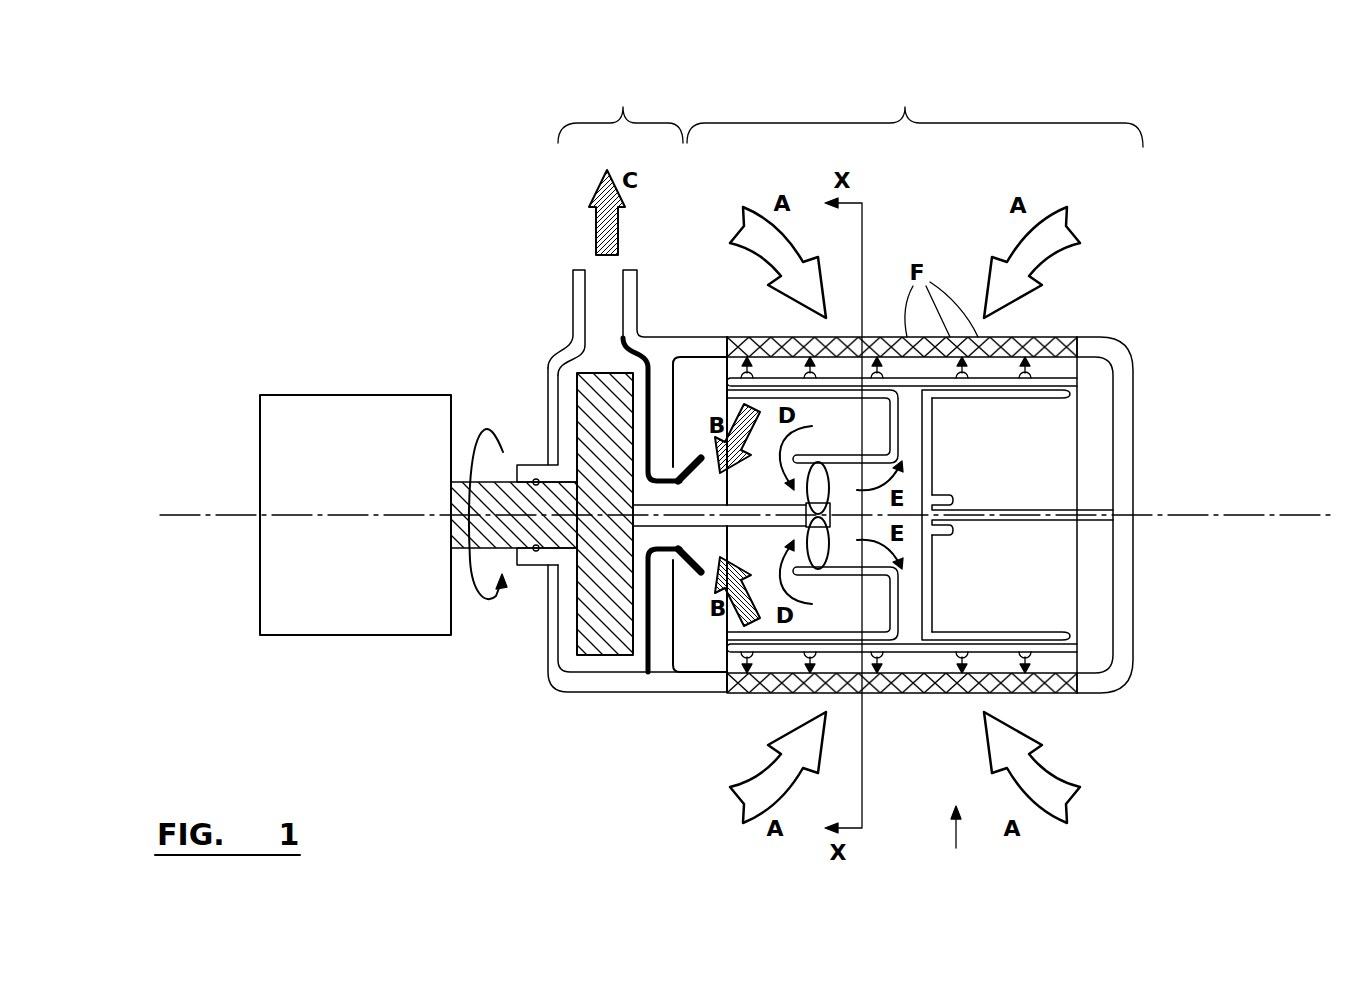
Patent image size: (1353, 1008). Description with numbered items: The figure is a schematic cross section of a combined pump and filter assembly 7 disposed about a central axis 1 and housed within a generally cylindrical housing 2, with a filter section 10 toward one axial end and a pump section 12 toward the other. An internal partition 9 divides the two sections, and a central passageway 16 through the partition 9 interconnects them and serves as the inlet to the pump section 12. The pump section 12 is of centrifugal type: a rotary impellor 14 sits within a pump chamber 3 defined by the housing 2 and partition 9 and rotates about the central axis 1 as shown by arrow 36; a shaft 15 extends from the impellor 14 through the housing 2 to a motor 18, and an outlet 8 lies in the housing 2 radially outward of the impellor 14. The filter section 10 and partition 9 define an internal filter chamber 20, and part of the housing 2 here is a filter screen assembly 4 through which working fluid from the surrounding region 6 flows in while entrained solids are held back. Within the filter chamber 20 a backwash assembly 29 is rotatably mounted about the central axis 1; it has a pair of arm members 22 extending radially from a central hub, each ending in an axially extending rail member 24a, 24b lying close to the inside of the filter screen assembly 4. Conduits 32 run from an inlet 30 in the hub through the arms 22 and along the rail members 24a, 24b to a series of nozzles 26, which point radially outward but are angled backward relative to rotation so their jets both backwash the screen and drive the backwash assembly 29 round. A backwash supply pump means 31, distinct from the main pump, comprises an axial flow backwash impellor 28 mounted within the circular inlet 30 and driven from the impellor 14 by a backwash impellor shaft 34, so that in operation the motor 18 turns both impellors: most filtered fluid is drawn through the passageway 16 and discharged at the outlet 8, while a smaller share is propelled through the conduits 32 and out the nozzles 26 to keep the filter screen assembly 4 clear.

The central axis 1 is at (1198, 522).
The housing 2 is at (697, 683).
The pump chamber 3 is at (582, 364).
The filter screen assembly 4 is at (1046, 700).
The surrounding region 6 is at (928, 838).
The pump and filter assembly 7 is at (956, 848).
The outlet 8 is at (637, 253).
The internal partition 9 is at (662, 395).
The filter section 10 is at (906, 107).
The pump section 12 is at (623, 107).
The rotary impellor 14 is at (585, 657).
The shaft 15 is at (508, 565).
The central passageway 16 is at (700, 452).
The motor 18 is at (335, 603).
The filter chamber 20 is at (826, 619).
The arm members 22 is at (932, 440).
The rail member 24a is at (990, 643).
The rail member 24b is at (997, 392).
The nozzles 26 is at (985, 692).
The backwash impellor 28 is at (830, 487).
The backwash assembly 29 is at (932, 468).
The inlet 30 is at (788, 450).
The backwash supply pump means 31 is at (718, 527).
The conduits 32 is at (930, 416).
The backwash impellor shaft 34 is at (653, 527).
The arrow 36 is at (487, 427).